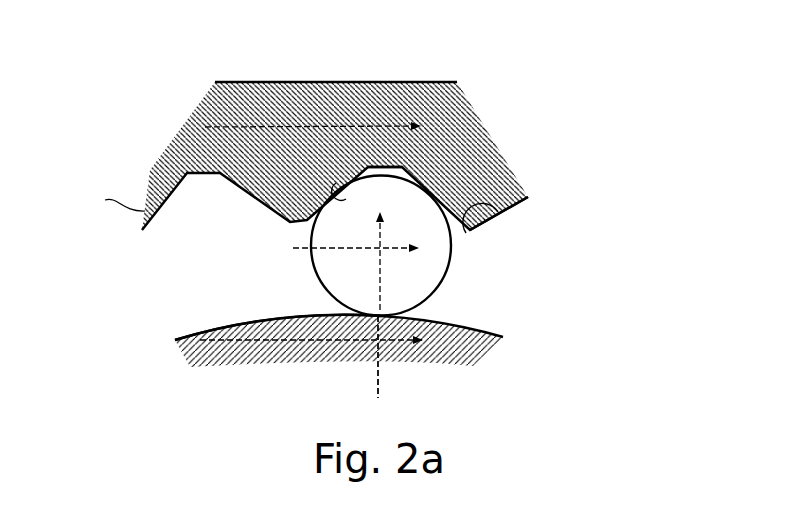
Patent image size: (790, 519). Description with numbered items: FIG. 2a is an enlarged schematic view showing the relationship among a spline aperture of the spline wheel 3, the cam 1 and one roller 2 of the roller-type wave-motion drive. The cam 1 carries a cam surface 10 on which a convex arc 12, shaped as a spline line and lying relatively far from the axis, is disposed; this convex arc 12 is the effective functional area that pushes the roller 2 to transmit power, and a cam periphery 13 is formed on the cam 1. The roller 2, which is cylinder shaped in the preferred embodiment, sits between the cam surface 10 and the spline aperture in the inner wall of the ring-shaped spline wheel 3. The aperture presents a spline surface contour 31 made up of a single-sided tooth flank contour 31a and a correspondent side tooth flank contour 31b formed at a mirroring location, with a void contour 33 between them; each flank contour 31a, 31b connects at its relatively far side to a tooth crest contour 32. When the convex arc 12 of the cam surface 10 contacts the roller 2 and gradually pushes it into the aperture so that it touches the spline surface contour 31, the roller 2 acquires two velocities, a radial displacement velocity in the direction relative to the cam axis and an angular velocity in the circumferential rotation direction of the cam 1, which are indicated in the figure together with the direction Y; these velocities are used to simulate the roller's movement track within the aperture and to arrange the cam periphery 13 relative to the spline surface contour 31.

The cam 1 is at (457, 353).
The roller 2 is at (438, 265).
The spline wheel 3 is at (205, 128).
The cam surface 10 is at (205, 347).
The convex arc 12 is at (362, 343).
The cam periphery 13 is at (244, 357).
The spline surface contour 31 is at (453, 135).
The single-sided tooth flank contour 31a is at (443, 203).
The correspondent side tooth flank contour 31b is at (333, 188).
The tooth crest contour 32 is at (502, 213).
The void contour 33 is at (390, 157).
The Y axis direction Y is at (378, 380).